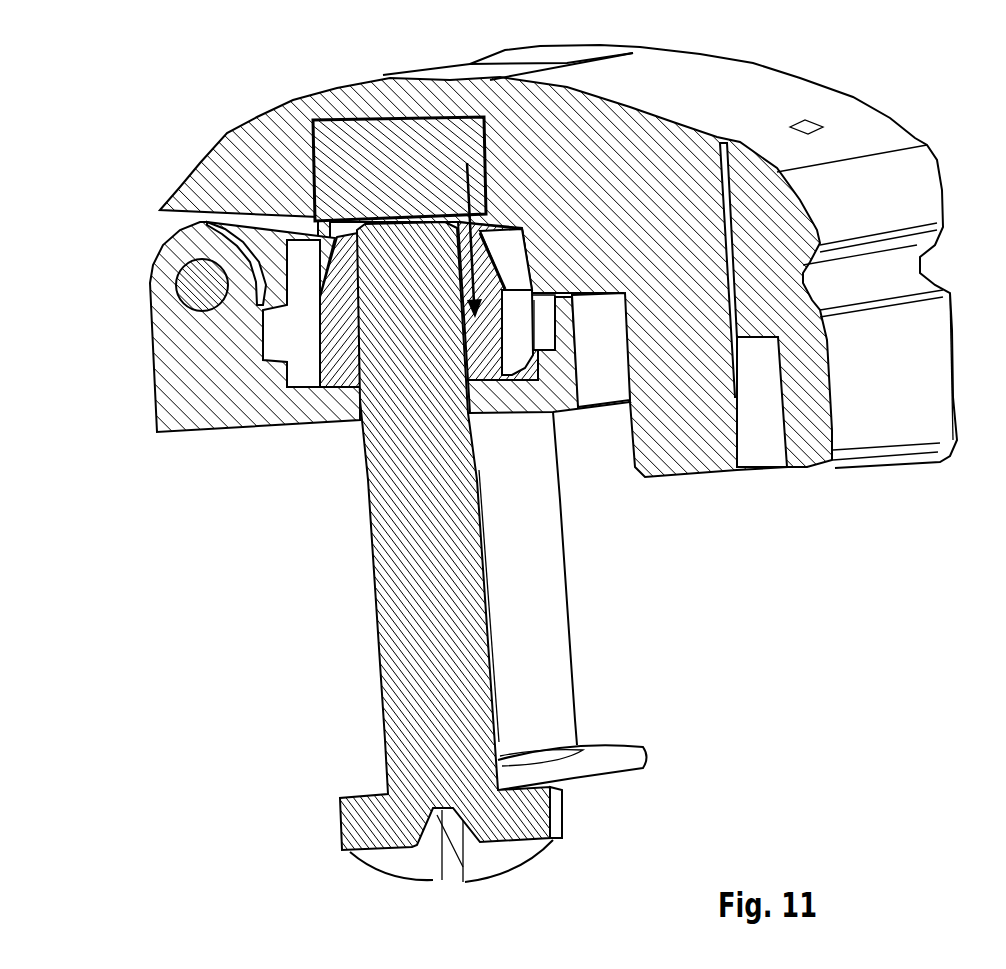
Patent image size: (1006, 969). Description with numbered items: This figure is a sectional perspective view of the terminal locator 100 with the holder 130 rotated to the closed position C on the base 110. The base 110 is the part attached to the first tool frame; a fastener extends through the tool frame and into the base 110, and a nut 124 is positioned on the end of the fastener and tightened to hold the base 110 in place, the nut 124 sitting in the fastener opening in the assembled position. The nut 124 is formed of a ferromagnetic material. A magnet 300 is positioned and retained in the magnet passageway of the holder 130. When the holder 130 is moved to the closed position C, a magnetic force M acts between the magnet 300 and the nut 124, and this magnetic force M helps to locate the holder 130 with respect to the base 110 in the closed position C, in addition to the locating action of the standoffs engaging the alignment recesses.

The terminal locator 100 is at (182, 34).
The base 110 is at (148, 392).
The nut 124 is at (330, 317).
The holder 130 is at (810, 68).
The magnet 300 is at (343, 150).
The magnetic force M is at (467, 163).
The closed position C is at (167, 72).